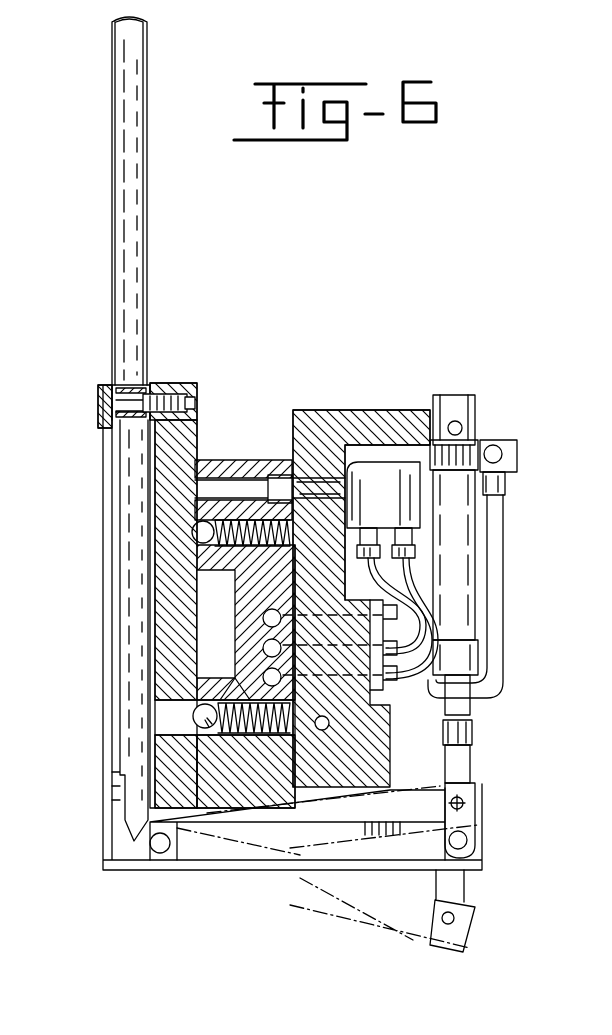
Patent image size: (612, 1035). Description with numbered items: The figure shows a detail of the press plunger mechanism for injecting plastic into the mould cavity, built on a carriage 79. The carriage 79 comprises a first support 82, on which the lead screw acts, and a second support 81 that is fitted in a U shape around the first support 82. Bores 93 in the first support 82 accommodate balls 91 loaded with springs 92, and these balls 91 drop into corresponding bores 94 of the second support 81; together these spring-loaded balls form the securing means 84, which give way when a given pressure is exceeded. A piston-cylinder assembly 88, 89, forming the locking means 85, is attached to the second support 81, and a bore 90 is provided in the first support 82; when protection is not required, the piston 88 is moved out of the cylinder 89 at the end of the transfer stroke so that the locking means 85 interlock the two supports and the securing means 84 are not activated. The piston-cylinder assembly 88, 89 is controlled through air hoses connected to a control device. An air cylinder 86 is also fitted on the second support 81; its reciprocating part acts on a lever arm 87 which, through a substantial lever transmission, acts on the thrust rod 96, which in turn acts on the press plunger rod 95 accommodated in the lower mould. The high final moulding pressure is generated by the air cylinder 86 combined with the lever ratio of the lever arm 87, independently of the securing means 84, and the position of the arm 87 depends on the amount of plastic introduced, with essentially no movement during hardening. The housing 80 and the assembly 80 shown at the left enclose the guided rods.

The carriage 79 is at (283, 372).
The rod guide housing 80 is at (112, 355).
The second support 81 is at (322, 795).
The first support 82 is at (228, 418).
The securing means 84 is at (160, 853).
The locking means 85 is at (358, 462).
The air cylinder 86 is at (472, 575).
The lever arm 87 is at (416, 855).
The piston 88 is at (347, 418).
The cylinder 89 is at (392, 460).
The bore 90 is at (290, 455).
The balls 91 is at (178, 857).
The springs 92 is at (240, 742).
The bores 93 is at (203, 678).
The bores 94 is at (193, 712).
The press plunger rod 95 is at (136, 74).
The thrust rod 96 is at (125, 560).